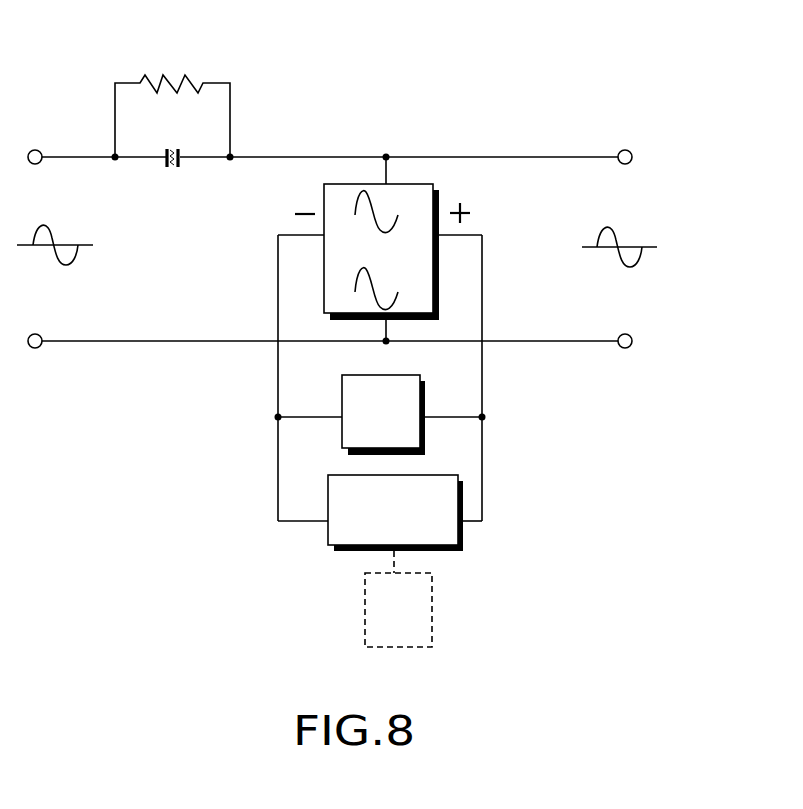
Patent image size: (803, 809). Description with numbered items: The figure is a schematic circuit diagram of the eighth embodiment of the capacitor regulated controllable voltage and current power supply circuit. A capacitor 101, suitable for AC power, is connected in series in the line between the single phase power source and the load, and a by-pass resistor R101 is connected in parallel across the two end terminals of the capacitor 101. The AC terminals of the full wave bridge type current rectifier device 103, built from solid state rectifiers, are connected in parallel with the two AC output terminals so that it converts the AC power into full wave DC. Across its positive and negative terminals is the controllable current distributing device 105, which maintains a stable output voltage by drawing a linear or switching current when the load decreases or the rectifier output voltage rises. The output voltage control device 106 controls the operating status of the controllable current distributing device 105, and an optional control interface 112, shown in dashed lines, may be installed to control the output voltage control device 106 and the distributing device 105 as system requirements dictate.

The by-pass resistor R101 is at (172, 99).
The capacitor 101 is at (169, 142).
The current rectifier device 103 is at (403, 110).
The controllable current distributing device 105 is at (518, 412).
The output voltage control device 106 is at (505, 583).
The optional control interface 112 is at (398, 599).